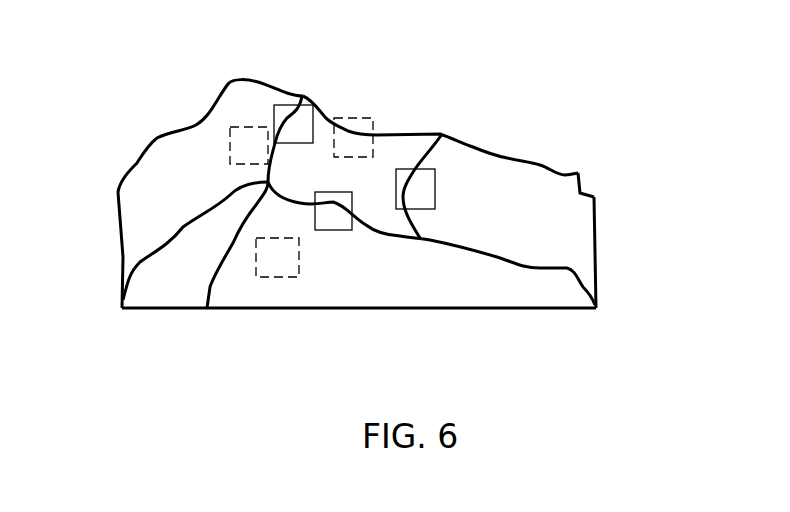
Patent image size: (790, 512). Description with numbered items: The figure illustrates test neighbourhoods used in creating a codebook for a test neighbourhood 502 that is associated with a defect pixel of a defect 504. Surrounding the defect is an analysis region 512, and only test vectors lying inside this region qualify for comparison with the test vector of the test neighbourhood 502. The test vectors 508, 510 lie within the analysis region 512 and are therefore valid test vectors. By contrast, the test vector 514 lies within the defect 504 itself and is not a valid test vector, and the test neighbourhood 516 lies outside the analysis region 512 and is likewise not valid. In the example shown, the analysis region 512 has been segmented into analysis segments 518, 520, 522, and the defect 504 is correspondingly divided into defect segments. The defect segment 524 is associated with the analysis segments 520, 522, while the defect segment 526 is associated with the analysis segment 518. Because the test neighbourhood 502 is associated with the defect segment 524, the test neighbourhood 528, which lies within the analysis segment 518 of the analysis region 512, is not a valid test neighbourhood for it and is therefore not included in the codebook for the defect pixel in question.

The test neighbourhood 502 is at (337, 232).
The defect 504 is at (530, 338).
The test vector 508 is at (303, 95).
The test vector 510 is at (437, 174).
The analysis region 512 is at (540, 142).
The test vector 514 is at (263, 277).
The test neighbourhood 516 is at (365, 118).
The analysis segment 518 is at (135, 222).
The analysis segment 520 is at (412, 150).
The analysis segment 522 is at (580, 247).
The defect segment 524 is at (459, 285).
The defect segment 526 is at (167, 295).
The test neighbourhood 528 is at (230, 137).